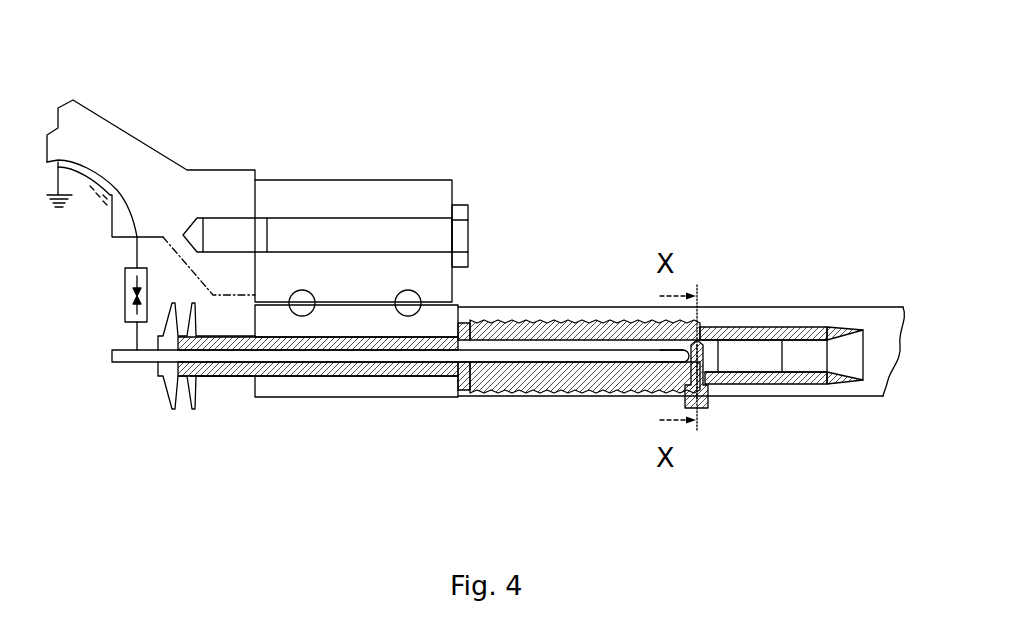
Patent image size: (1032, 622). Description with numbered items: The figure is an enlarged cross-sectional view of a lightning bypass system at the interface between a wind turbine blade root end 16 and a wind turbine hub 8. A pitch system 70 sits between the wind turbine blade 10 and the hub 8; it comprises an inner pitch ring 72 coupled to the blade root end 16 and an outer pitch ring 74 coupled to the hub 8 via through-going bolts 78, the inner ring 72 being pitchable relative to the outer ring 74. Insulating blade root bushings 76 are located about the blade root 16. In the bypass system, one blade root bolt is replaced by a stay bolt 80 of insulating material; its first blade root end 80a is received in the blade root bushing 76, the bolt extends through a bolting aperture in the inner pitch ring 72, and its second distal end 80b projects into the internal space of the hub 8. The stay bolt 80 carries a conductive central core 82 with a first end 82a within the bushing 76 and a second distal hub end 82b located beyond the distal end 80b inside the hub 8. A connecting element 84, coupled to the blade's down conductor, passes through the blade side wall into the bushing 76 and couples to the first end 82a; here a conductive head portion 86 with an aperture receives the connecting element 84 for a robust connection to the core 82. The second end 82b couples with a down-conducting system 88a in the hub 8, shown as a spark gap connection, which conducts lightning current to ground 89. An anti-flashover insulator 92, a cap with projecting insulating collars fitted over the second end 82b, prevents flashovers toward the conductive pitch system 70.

The wind turbine hub 8 is at (150, 172).
The wind turbine blade 10 is at (800, 308).
The wind turbine blade root end 16 is at (525, 272).
The pitch system 70 is at (510, 175).
The inner pitch ring 72 is at (360, 385).
The outer pitch ring 74 is at (345, 195).
The blade root bushing 76 is at (848, 322).
The bolts 78 is at (415, 240).
The stay bolt 80 is at (505, 392).
The first blade root end 80a is at (623, 408).
The second distal end 80b is at (223, 403).
The central core 82 is at (430, 378).
The first end 82a is at (722, 280).
The second distal hub end 82b is at (108, 393).
The connecting element 84 is at (713, 402).
The head portion 86 is at (840, 398).
The down-conducting system 88a is at (102, 336).
The ground 89 is at (55, 220).
The anti-flashover insulator 92 is at (190, 412).